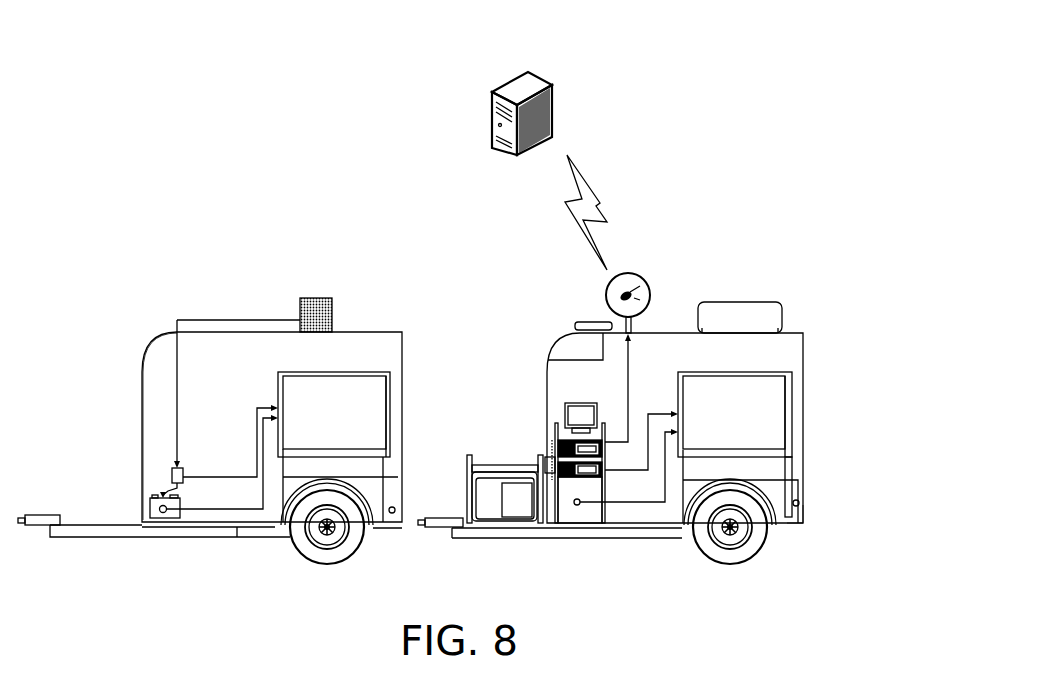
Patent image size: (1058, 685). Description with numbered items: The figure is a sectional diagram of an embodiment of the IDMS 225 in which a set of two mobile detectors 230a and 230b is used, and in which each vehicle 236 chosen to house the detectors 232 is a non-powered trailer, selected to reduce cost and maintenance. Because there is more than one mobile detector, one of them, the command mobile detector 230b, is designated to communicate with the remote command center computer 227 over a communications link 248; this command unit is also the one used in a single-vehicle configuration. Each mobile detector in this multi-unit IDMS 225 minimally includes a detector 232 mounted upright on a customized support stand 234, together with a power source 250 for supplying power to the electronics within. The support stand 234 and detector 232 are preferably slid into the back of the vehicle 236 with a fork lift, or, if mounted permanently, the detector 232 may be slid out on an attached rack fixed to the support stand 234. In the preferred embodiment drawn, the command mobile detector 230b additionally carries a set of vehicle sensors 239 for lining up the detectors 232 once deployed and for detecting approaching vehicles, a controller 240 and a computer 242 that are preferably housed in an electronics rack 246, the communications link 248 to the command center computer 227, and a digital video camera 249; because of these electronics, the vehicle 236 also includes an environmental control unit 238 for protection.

The IDMS 225 is at (255, 126).
The remote command center computer 227 is at (572, 100).
The mobile detector 230a is at (239, 387).
The command mobile detector 230b is at (667, 388).
The detector 232 is at (537, 397).
The support stand 234 is at (839, 457).
The vehicle 236 is at (110, 394).
The environmental control unit 238 is at (754, 295).
The vehicle sensors 239 is at (846, 550).
The controller 240 is at (505, 435).
The computer 242 is at (526, 380).
The electronics rack 246 is at (633, 504).
The communications link 248 is at (663, 342).
The digital video camera 249 is at (549, 288).
The power source 250 is at (293, 427).